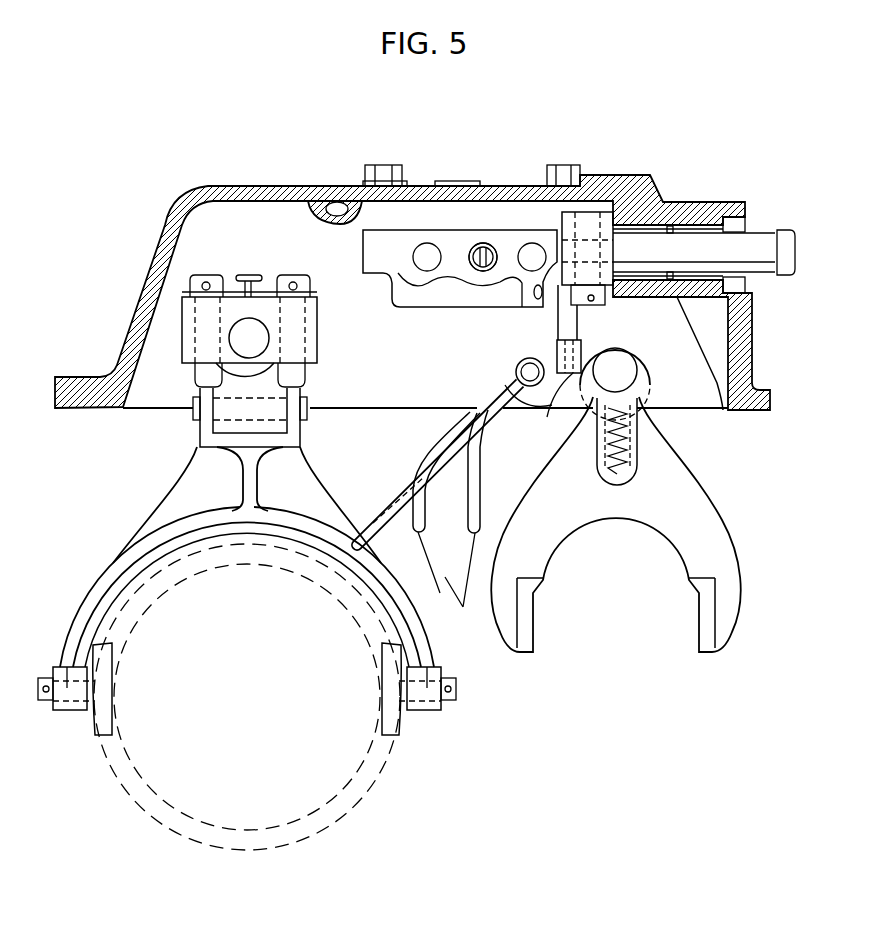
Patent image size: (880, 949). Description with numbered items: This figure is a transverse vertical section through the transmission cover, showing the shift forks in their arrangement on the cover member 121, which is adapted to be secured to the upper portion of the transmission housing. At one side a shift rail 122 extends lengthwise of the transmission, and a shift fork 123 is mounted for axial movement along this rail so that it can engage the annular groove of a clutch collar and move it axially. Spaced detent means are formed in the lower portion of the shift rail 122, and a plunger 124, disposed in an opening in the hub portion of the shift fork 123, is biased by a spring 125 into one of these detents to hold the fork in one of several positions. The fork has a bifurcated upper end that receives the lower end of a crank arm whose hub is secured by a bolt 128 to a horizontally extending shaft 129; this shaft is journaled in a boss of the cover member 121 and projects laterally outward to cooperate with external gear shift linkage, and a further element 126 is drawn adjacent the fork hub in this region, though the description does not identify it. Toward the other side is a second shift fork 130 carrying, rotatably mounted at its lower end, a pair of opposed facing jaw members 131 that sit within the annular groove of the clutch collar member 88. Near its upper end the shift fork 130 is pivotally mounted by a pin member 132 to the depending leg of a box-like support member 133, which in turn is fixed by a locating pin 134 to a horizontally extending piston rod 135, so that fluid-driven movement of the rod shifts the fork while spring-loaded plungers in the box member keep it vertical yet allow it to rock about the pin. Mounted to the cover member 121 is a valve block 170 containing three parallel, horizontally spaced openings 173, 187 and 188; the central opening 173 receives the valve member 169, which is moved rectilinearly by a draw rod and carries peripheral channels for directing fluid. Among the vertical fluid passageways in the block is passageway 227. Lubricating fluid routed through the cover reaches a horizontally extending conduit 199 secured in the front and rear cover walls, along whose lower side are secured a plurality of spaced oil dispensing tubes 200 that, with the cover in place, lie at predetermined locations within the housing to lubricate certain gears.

The clutch collar member 88 is at (338, 806).
The cover member 121 is at (238, 186).
The shift rail 122 is at (618, 368).
The shift fork 123 is at (702, 541).
The plunger 124 is at (650, 390).
The spring 125 is at (640, 431).
The link block 126 is at (556, 405).
The bolt 128 is at (604, 305).
The shaft 129 is at (752, 243).
The shift fork 130 is at (127, 537).
The jaw members 131 is at (106, 726).
The pin member 132 is at (270, 407).
The box-like support member 133 is at (317, 345).
The locating pin 134 is at (249, 274).
The piston rod 135 is at (240, 338).
The valve member 169 is at (484, 253).
The valve block 170 is at (448, 245).
The opening 173 is at (480, 271).
The opening 187 is at (528, 271).
The opening 188 is at (420, 271).
The conduit 199 is at (516, 372).
The oil dispensing tubes 200 is at (397, 503).
The fluid passageway 227 is at (567, 322).